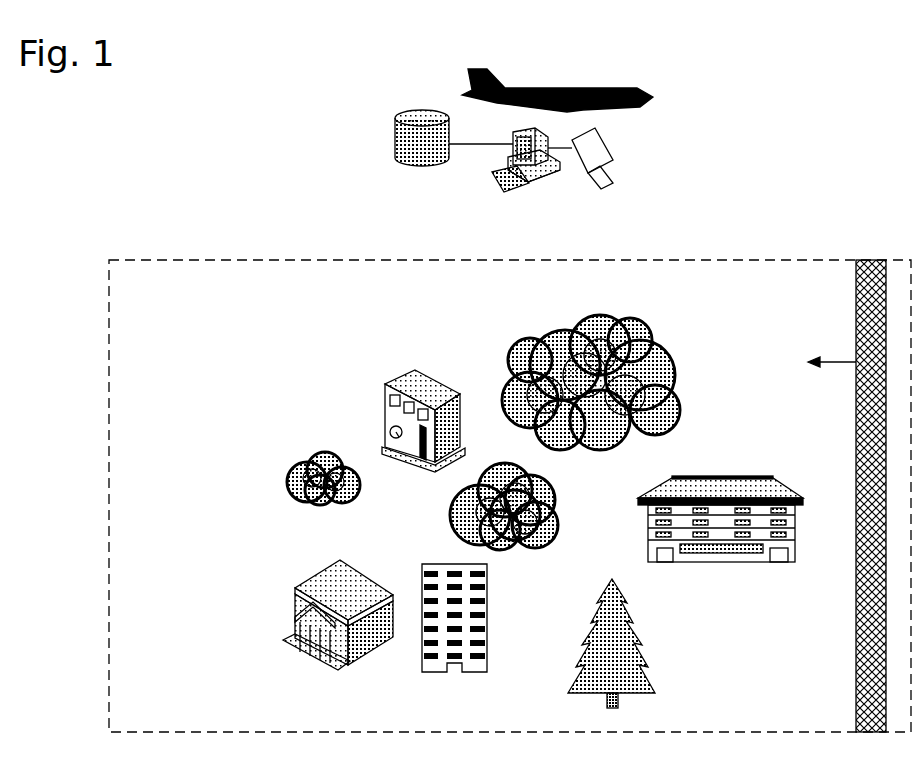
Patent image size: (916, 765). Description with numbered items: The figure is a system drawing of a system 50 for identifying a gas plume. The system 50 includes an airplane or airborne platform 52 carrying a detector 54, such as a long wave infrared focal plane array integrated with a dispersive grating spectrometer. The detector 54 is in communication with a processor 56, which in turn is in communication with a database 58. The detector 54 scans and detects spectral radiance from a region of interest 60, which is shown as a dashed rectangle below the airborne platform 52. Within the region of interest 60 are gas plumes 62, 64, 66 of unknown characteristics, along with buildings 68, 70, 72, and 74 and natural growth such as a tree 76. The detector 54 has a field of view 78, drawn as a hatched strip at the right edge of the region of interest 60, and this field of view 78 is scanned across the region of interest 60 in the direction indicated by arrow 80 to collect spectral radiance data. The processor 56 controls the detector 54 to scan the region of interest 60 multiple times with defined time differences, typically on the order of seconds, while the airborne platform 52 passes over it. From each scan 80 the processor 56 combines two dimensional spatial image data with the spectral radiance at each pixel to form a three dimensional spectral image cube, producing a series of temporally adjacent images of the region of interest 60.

The system 50 is at (152, 161).
The airborne platform 52 is at (540, 88).
The detector 54 is at (613, 148).
The processor 56 is at (543, 183).
The database 58 is at (430, 167).
The region of interest 60 is at (273, 260).
The gas plume 62 is at (673, 353).
The gas plume 64 is at (560, 510).
The gas plume 66 is at (303, 458).
The building 68 is at (445, 378).
The building 70 is at (725, 478).
The building 72 is at (295, 603).
The building 74 is at (493, 615).
The tree 76 is at (653, 650).
The field of view 78 is at (856, 290).
The arrow 80 is at (836, 366).